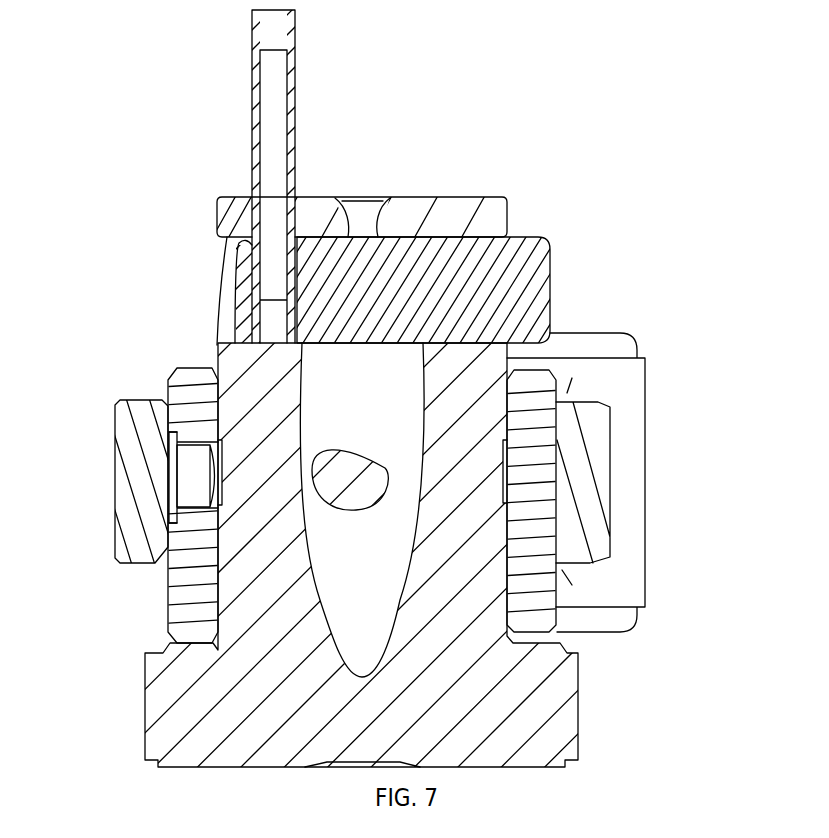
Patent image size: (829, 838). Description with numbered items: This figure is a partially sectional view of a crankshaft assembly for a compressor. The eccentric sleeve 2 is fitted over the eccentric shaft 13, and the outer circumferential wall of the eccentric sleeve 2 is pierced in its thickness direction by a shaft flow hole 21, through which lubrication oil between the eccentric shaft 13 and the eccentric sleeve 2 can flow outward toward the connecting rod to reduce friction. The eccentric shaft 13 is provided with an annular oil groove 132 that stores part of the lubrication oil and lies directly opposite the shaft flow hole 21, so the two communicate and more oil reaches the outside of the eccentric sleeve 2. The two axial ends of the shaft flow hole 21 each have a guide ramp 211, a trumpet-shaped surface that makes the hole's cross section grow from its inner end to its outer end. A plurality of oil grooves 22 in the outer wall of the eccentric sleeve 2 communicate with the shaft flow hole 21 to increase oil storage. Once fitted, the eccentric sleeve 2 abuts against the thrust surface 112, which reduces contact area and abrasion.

The eccentric shaft 13 is at (477, 598).
The annular oil groove 132 is at (215, 447).
The eccentric sleeve 2 is at (185, 598).
The shaft flow hole 21 is at (197, 467).
The guide ramp 211 is at (180, 445).
The oil groove 22 is at (175, 428).
The thrust surface 112 is at (568, 620).